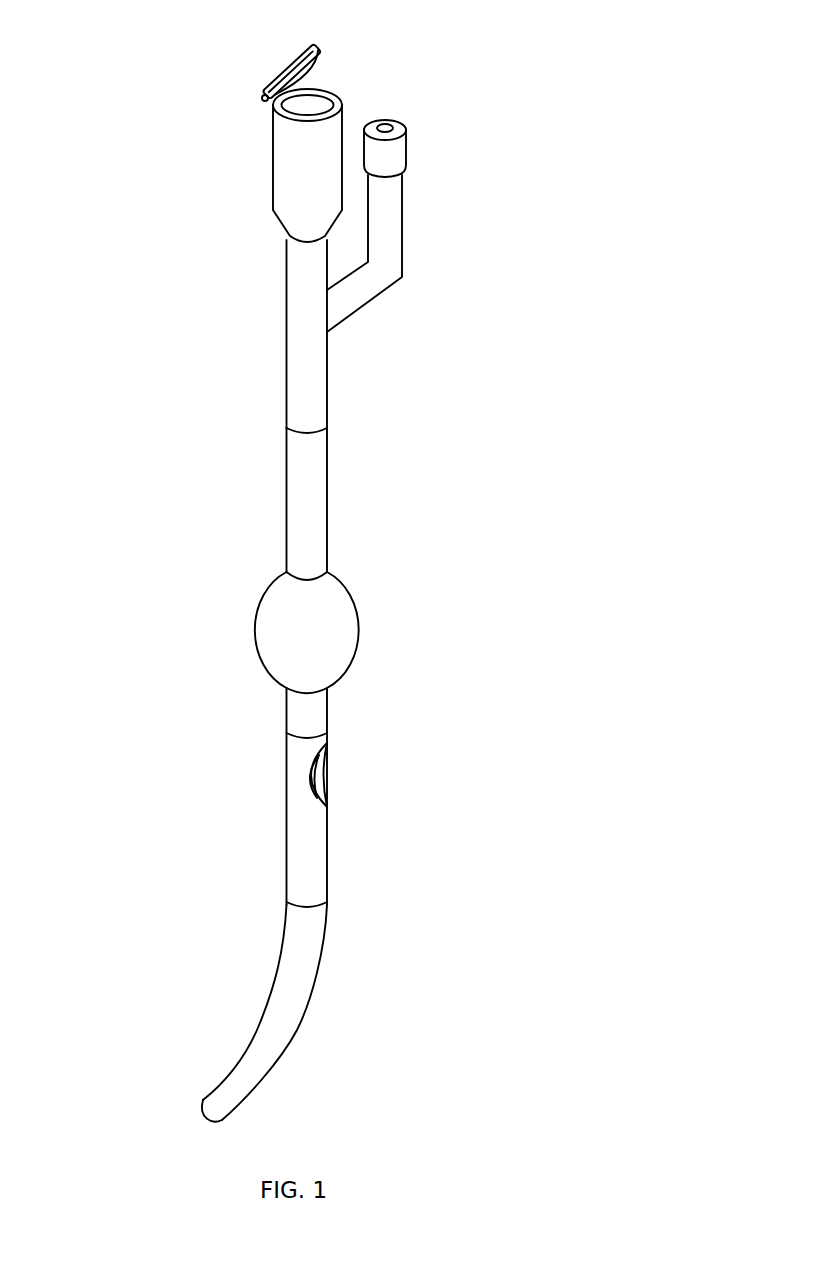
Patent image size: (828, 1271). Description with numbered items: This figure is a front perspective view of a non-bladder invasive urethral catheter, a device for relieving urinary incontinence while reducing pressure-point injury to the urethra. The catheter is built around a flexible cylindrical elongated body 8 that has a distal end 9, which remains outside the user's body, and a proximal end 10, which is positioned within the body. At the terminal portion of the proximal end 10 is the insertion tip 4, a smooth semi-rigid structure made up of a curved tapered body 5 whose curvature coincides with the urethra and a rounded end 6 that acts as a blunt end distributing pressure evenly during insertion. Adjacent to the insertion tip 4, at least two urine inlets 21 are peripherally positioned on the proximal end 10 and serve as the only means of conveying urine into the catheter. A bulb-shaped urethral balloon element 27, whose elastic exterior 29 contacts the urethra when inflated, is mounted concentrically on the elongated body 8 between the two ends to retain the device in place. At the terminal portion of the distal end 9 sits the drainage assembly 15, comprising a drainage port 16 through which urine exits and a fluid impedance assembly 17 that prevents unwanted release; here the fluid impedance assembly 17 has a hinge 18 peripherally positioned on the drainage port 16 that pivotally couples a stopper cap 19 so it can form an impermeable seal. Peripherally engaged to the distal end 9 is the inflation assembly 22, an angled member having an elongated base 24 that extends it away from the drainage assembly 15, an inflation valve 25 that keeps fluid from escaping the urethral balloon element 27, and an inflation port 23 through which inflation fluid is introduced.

The insertion tip 4 is at (327, 1053).
The curved tapered body 5 is at (294, 982).
The rounded end 6 is at (163, 1092).
The elongated body 8 is at (299, 536).
The distal end 9 is at (299, 361).
The proximal end 10 is at (295, 869).
The drainage assembly 15 is at (318, 192).
The drainage port 16 is at (346, 75).
The fluid impedance assembly 17 is at (211, 108).
The hinge 18 is at (224, 78).
The stopper cap 19 is at (271, 58).
The urine inlets 21 is at (345, 788).
The inflation assembly 22 is at (522, 166).
The inflation port 23 is at (423, 106).
The elongated base 24 is at (370, 261).
The inflation valve 25 is at (423, 148).
The urethral balloon element 27 is at (293, 644).
The elastic exterior 29 is at (349, 632).